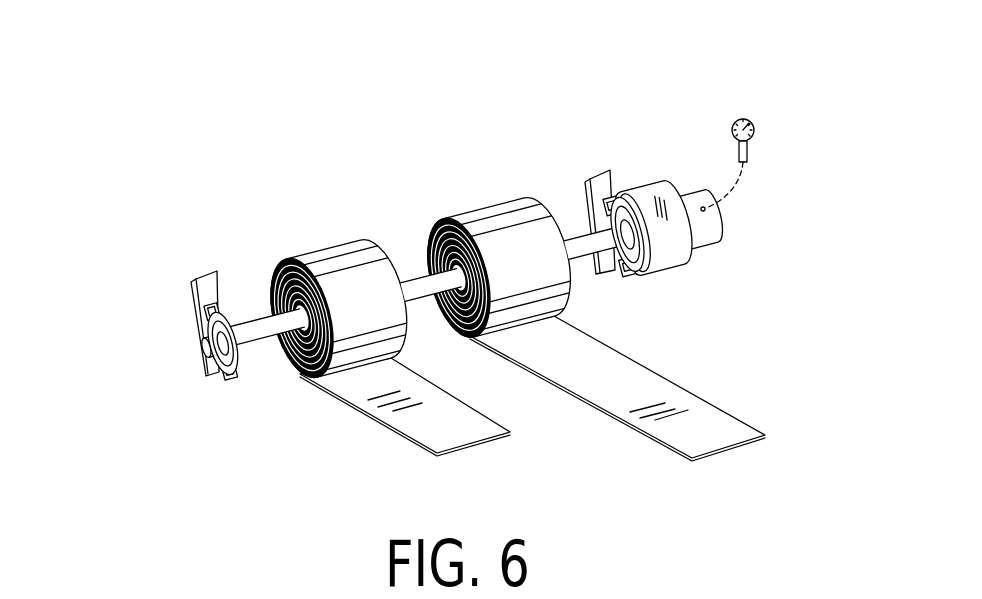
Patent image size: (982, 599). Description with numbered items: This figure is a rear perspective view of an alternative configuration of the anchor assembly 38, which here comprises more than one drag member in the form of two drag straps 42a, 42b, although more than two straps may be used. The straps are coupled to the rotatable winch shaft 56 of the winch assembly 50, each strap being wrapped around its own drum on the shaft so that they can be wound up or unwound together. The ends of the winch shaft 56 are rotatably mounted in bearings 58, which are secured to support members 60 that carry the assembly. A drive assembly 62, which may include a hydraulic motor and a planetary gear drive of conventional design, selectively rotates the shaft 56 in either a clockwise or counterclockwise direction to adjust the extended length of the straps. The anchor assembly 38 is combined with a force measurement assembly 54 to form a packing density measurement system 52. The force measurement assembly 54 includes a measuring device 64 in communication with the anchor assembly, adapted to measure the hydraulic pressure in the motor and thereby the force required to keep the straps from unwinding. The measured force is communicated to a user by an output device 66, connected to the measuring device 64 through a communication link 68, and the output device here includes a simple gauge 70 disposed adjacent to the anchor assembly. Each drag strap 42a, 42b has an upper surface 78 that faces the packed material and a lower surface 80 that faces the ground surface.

The anchor assembly 38 is at (405, 186).
The packing density measurement system 52 is at (494, 106).
The winch shaft 56 is at (427, 287).
The bearings 58 is at (208, 330).
The support members 60 is at (192, 290).
The winch 50 is at (723, 170).
The drive assembly 62 is at (716, 258).
The measuring device 64 is at (715, 226).
The force measurement assembly 54 is at (775, 119).
The output device 66 is at (790, 95).
The communication link 68 is at (738, 178).
The gauge 70 is at (756, 130).
The drag strap 42a is at (438, 415).
The drag strap 42b is at (648, 417).
The upper surface 78 is at (697, 424).
The lower surface 80 is at (636, 432).